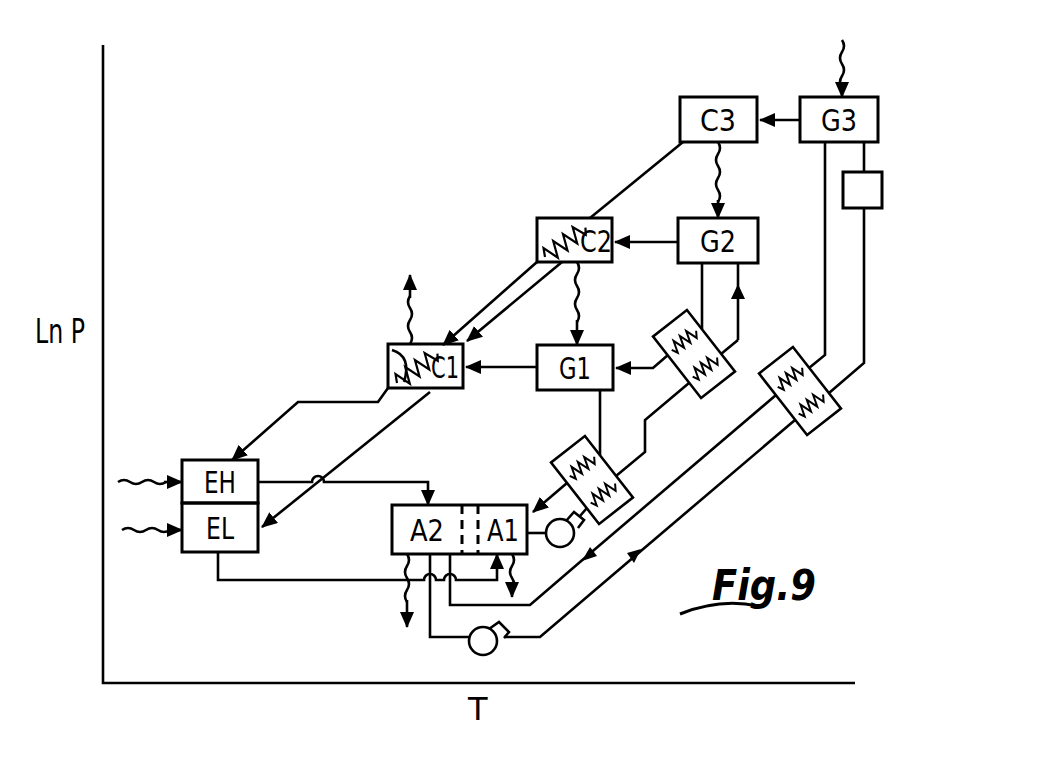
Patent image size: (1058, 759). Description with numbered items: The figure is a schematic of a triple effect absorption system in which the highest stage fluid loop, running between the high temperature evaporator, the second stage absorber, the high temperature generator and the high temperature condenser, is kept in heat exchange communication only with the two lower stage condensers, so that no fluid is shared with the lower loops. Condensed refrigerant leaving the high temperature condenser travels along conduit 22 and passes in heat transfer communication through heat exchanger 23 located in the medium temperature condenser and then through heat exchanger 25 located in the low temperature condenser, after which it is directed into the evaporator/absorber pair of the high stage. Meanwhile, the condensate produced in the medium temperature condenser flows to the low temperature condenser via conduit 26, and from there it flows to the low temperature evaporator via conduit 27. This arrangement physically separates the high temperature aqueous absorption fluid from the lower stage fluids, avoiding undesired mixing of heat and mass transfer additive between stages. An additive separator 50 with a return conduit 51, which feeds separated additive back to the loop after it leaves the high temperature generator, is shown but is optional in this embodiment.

The conduit 22 is at (643, 178).
The heat exchanger 23 is at (565, 237).
The heat exchanger 25 is at (388, 348).
The conduit 26 is at (513, 303).
The conduit 27 is at (388, 427).
The separator 50 is at (882, 208).
The return conduit 51 is at (825, 190).